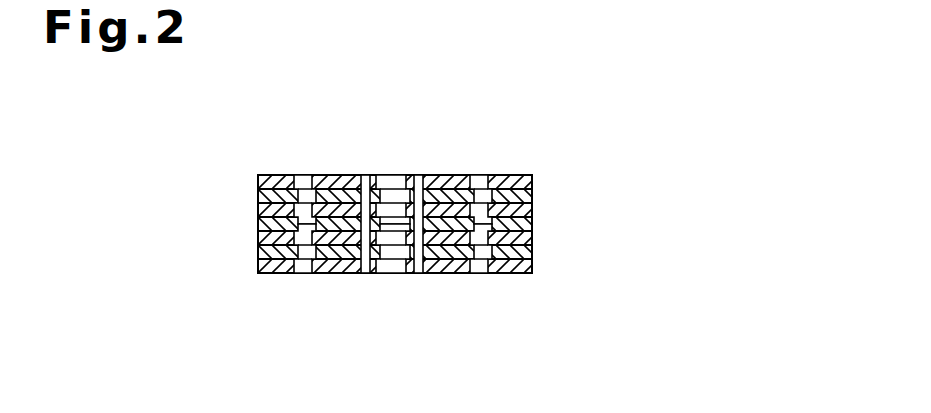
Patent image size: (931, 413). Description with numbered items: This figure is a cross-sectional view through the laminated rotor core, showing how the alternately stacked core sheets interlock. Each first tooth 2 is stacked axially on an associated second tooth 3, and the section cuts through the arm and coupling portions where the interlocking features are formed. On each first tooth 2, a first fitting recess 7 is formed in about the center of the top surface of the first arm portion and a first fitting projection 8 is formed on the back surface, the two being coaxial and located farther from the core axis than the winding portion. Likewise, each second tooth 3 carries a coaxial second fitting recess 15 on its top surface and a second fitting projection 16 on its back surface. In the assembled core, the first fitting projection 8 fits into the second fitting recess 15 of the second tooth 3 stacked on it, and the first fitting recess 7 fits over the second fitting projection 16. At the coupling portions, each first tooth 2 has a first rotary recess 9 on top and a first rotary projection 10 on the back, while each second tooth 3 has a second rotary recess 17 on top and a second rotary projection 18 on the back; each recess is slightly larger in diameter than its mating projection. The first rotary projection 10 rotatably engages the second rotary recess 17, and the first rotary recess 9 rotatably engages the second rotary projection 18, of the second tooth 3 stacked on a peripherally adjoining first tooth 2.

The first tooth 2 is at (533, 262).
The second tooth 3 is at (258, 263).
The first fitting recess 7 is at (305, 175).
The first fitting projection 8 is at (288, 273).
The first rotary recess 9 is at (385, 175).
The first rotary projection 10 is at (408, 274).
The second fitting recess 15 is at (300, 175).
The second fitting projection 16 is at (322, 273).
The second rotary recess 17 is at (398, 174).
The second rotary projection 18 is at (365, 276).